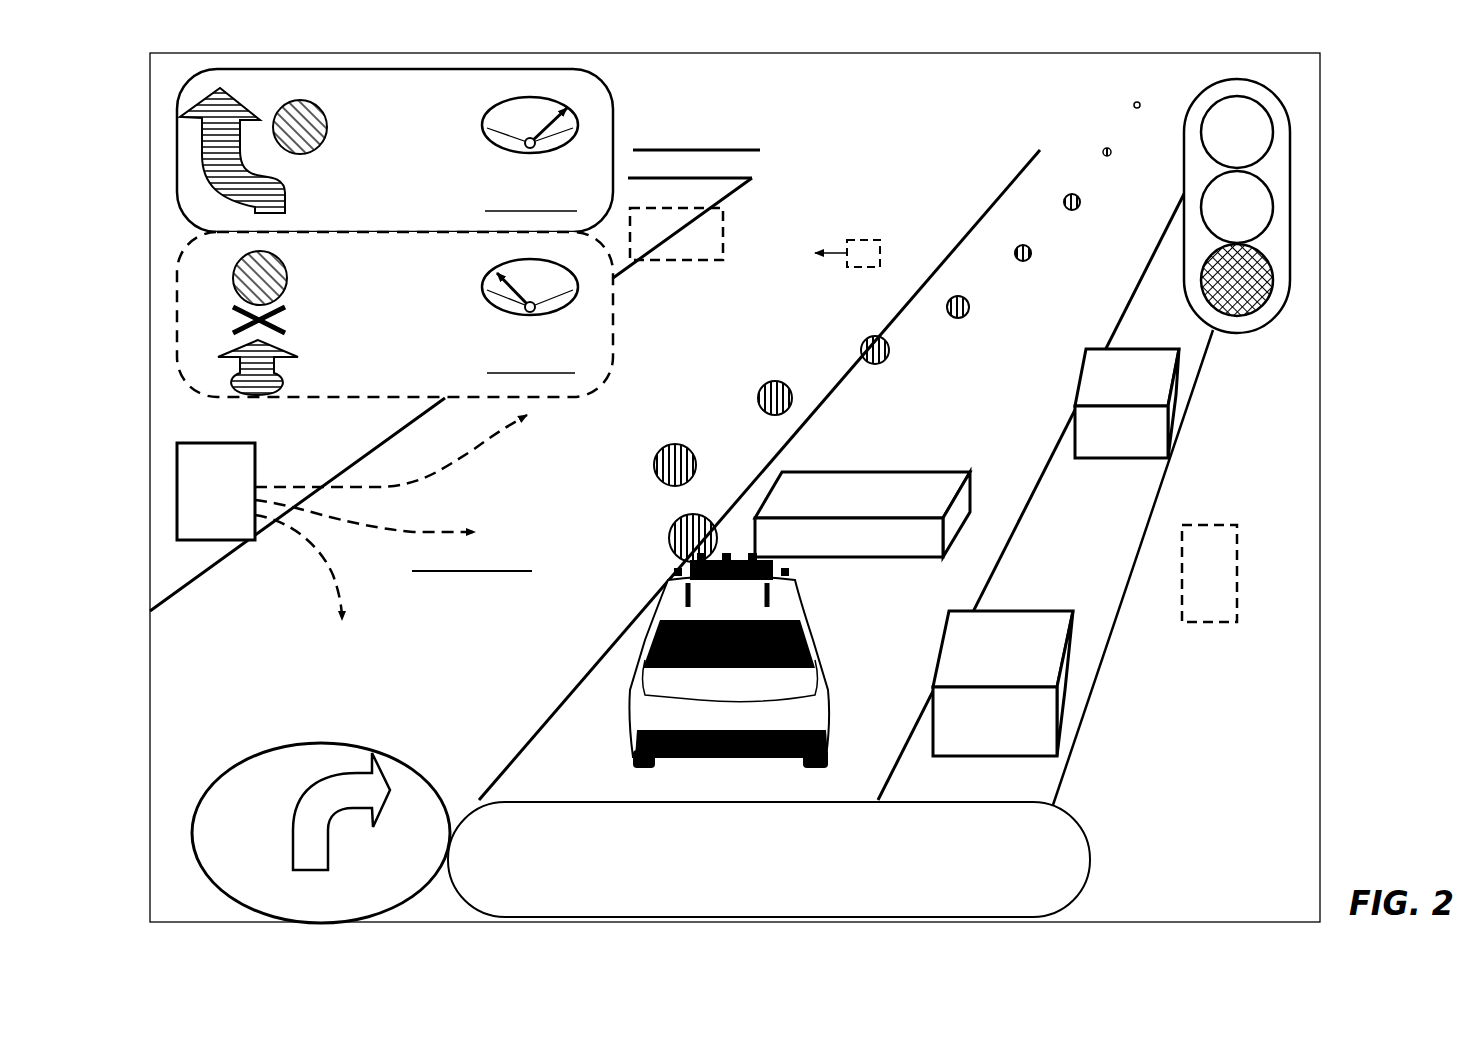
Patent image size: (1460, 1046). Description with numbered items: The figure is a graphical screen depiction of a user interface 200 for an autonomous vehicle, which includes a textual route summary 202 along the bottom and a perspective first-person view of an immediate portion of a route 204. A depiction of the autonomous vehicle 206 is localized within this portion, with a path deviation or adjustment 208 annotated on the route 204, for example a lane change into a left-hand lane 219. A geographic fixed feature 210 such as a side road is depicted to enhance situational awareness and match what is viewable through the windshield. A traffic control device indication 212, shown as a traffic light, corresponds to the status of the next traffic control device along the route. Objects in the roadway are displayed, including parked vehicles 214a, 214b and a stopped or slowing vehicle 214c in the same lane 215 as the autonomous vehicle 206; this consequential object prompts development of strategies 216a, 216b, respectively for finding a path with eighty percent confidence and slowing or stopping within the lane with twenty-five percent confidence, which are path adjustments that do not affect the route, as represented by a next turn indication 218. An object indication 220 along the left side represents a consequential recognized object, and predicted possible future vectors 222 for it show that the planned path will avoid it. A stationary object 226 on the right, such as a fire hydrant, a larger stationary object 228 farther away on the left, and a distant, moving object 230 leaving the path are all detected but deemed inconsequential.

The user interface 200 is at (422, 50).
The textual route summary 202 is at (1090, 855).
The route 204 is at (685, 105).
The autonomous vehicle 206 is at (630, 678).
The path deviation or adjustment 208 is at (858, 338).
The geographic fixed feature 210 is at (715, 148).
The traffic control device indication 212 is at (1290, 204).
The parked vehicle 214a is at (1176, 434).
The parked vehicle 214b is at (1060, 684).
The stopped or slowing vehicle 214c is at (970, 499).
The lane 215 is at (1010, 403).
The strategy 216a is at (177, 145).
The strategy 216b is at (177, 318).
The next turn indication 218 is at (193, 802).
The left-hand lane 219 is at (340, 703).
The object indication 220 is at (177, 488).
The possible future vectors 222 is at (320, 545).
The stationary object 226 is at (1237, 573).
The stationary object 228 is at (725, 208).
The distant, moving object 230 is at (880, 243).